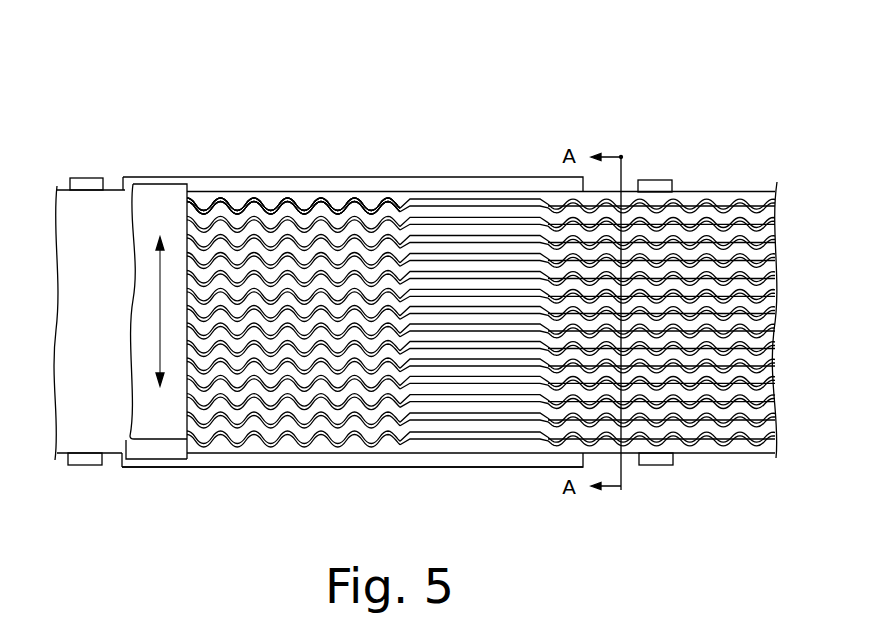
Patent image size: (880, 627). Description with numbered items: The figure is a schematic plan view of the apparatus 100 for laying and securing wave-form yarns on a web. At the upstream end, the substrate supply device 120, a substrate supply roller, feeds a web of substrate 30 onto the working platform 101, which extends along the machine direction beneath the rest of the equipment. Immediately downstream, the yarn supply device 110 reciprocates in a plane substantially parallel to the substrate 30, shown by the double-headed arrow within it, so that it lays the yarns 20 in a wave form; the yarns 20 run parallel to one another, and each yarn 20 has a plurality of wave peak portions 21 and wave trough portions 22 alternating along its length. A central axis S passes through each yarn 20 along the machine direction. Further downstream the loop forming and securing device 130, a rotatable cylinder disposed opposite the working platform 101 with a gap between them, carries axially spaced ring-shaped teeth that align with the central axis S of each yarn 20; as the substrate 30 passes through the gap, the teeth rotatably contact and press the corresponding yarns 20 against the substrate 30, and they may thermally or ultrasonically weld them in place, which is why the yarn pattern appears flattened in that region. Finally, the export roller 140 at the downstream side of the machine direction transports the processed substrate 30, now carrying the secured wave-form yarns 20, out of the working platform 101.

The apparatus 100 is at (419, 131).
The substrate supply device 120 is at (84, 184).
The substrate 30 is at (114, 222).
The yarn supply device 110 is at (161, 195).
The yarns 20 is at (365, 200).
The wave peak portions 21 is at (222, 200).
The wave trough portions 22 is at (272, 207).
The central axis S is at (322, 210).
The loop forming and securing device 130 is at (481, 222).
The export roller 140 is at (653, 188).
The working platform 101 is at (215, 458).